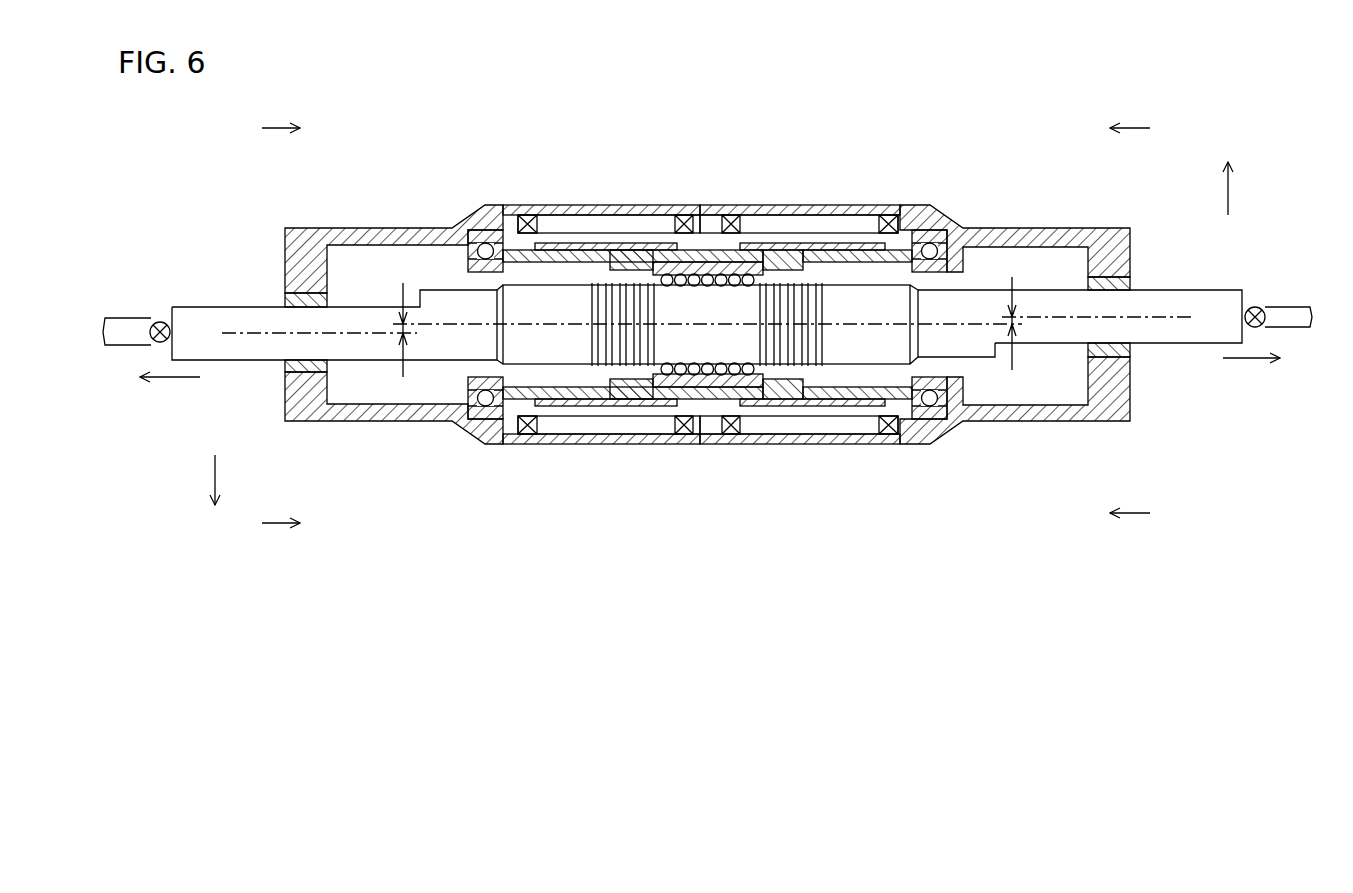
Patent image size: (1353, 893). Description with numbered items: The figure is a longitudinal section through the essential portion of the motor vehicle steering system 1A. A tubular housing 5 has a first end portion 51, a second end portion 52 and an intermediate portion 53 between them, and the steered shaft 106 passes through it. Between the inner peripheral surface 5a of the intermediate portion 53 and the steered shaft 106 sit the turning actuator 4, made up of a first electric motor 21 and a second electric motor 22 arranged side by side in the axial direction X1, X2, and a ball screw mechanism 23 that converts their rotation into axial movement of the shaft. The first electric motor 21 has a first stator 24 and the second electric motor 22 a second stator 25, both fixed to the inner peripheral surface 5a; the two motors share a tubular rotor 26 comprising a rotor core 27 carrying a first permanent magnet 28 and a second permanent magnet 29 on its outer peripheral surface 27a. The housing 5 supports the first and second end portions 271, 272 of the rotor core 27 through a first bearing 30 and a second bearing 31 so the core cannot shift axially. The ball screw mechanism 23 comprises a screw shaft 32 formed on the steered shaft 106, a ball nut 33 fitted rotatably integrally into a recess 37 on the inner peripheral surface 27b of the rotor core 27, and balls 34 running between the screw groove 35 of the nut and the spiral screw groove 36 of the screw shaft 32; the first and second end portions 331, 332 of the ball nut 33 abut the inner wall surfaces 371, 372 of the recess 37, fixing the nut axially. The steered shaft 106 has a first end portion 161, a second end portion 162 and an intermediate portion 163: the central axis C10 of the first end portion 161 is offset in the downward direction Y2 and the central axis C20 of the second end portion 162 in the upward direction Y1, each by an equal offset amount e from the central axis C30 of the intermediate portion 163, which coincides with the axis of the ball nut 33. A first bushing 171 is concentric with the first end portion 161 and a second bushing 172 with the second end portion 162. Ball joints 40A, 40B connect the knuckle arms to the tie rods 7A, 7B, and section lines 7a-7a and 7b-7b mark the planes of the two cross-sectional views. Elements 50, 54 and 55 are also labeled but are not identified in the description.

The motor vehicle steering system 1A is at (1026, 146).
The turning actuator 4 is at (568, 210).
The housing 5 is at (783, 207).
The inner peripheral surface 5a is at (714, 224).
The first electric motor 21 is at (548, 212).
The second electric motor 22 is at (872, 214).
The ball screw mechanism 23 is at (708, 243).
The first stator 24 is at (606, 232).
The second stator 25 is at (843, 228).
The rotor 26 is at (508, 247).
The rotor core 27 is at (590, 400).
The outer peripheral surface 27a is at (513, 400).
The inner peripheral surface 27b is at (553, 400).
The first permanent magnet 28 is at (621, 400).
The second permanent magnet 29 is at (805, 381).
The first bearing 30 is at (485, 407).
The second bearing 31 is at (930, 407).
The screw shaft 32 is at (836, 372).
The ball nut 33 is at (703, 389).
The balls 34 is at (747, 389).
The screw groove 35 is at (750, 282).
The screw groove 36 is at (815, 333).
The recess 37 is at (670, 256).
The ball joint 40A is at (160, 320).
The ball joint 40B is at (1257, 305).
The housing assembly 50 is at (909, 183).
The first end portion 51 is at (308, 228).
The second end portion 52 is at (1106, 235).
The intermediate portion 53 is at (815, 212).
The left seal 54 is at (282, 305).
The right seal 55 is at (1125, 291).
The steered shaft 106 is at (968, 287).
The first end portion 161 is at (201, 305).
The second end portion 162 is at (1222, 303).
The intermediate portion 163 is at (885, 290).
The first bushing 171 is at (302, 421).
The second bushing 172 is at (1106, 365).
The first end portion 271 is at (470, 376).
The second end portion 272 is at (945, 376).
The first end portion 331 is at (652, 262).
The second end portion 332 is at (766, 252).
The inner wall surface 371 is at (660, 392).
The inner wall surface 372 is at (757, 379).
The tie rod 7A is at (122, 337).
The tie rod 7B is at (1297, 328).
The section line 7a- 7a is at (264, 325).
The section line 7b- 7b is at (1149, 320).
The axial direction X1 is at (173, 383).
The axial direction X2 is at (1235, 363).
The upward direction Y1 is at (1232, 202).
The downward direction Y2 is at (214, 466).
The central axis C10 is at (235, 340).
The central axis C20 is at (1183, 320).
The central axis C30 is at (457, 323).
The offset amount e is at (398, 324).